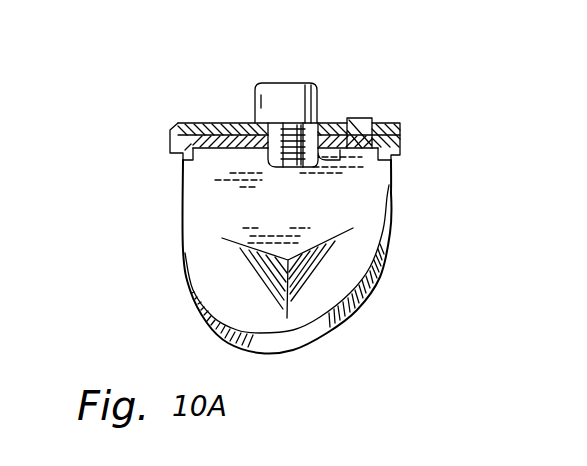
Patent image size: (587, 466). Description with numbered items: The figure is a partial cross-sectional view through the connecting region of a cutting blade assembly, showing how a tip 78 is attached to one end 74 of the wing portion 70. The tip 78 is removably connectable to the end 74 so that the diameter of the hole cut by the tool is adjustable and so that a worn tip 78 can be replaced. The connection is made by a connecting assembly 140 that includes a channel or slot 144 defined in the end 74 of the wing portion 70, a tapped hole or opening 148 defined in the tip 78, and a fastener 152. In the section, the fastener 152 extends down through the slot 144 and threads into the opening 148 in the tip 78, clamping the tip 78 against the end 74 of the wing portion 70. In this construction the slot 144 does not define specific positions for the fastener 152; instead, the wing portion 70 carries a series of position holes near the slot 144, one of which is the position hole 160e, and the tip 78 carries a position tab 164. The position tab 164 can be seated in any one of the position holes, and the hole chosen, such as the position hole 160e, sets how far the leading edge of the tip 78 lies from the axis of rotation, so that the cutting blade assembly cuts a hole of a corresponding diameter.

The wing portion 70 is at (197, 123).
The end of the wing portion 74 is at (172, 132).
The slot 144 is at (282, 122).
The fastener 152 is at (318, 86).
The connecting assembly 140 is at (331, 100).
The position tab 164 is at (362, 118).
The position hole 160e is at (392, 126).
The opening 148 is at (280, 168).
The tip 78 is at (340, 273).